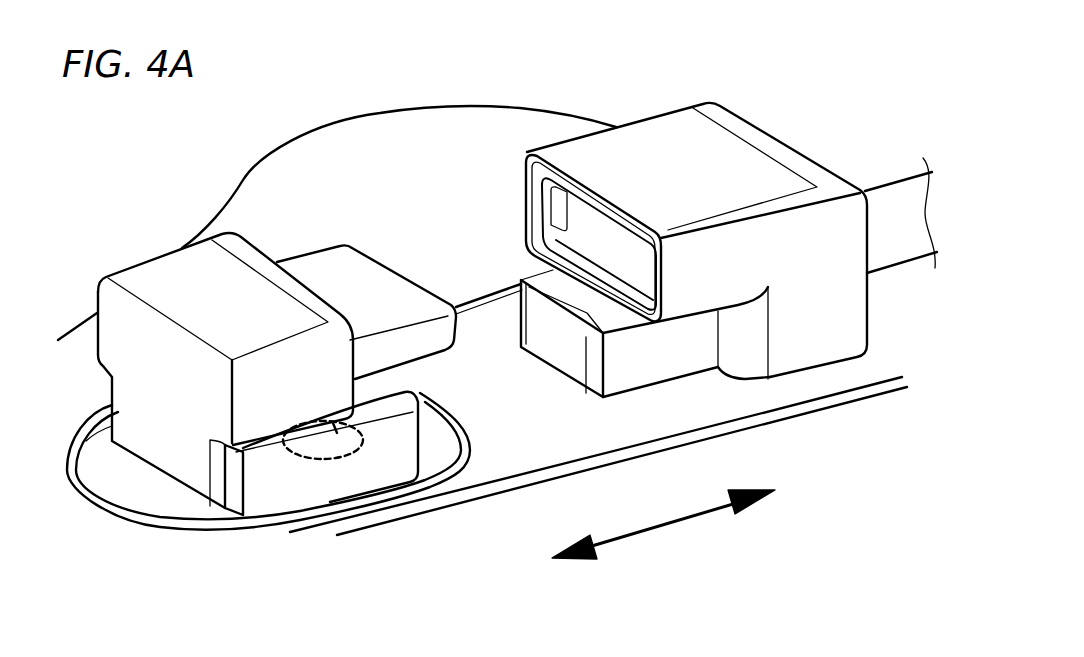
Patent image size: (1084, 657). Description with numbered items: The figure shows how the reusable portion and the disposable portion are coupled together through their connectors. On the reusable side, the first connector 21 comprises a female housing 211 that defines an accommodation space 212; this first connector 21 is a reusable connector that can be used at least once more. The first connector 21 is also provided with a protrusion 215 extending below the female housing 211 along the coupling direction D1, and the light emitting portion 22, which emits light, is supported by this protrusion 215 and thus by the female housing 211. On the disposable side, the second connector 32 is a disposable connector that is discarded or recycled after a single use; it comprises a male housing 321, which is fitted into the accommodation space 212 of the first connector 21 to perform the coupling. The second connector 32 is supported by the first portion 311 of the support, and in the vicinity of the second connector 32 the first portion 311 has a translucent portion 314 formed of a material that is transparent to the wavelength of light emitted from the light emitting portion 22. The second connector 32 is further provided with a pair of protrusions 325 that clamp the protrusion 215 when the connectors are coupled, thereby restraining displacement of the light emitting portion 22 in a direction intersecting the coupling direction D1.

The first connector 21 is at (747, 88).
The female housing 211 is at (668, 133).
The accommodation space 212 is at (606, 246).
The protrusion 215 is at (693, 360).
The light emitting portion 22 is at (648, 362).
The second connector 32 is at (91, 285).
The male housing 321 is at (348, 256).
The protrusions 325 is at (365, 482).
The first portion 311 is at (148, 498).
The translucent portion 314 is at (317, 460).
The coupling direction D1 is at (667, 527).